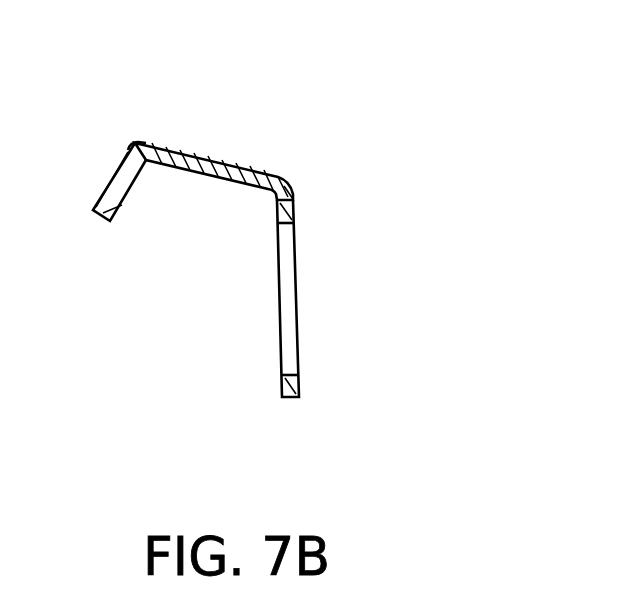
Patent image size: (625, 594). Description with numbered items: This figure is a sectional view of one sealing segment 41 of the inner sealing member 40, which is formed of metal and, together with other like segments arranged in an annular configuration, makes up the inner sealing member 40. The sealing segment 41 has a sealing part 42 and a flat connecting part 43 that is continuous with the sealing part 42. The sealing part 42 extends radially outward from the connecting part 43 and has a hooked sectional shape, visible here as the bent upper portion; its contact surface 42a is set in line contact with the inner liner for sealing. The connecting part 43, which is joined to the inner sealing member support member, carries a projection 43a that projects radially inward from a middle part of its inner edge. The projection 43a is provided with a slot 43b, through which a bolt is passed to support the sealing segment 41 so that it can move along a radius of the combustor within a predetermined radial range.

The inner sealing member 40 is at (272, 43).
The sealing segment 41 is at (252, 160).
The sealing part 42 is at (105, 219).
The contact surface 42a is at (147, 138).
The connecting part 43 is at (294, 207).
The projection 43a is at (290, 400).
The slot 43b is at (293, 363).